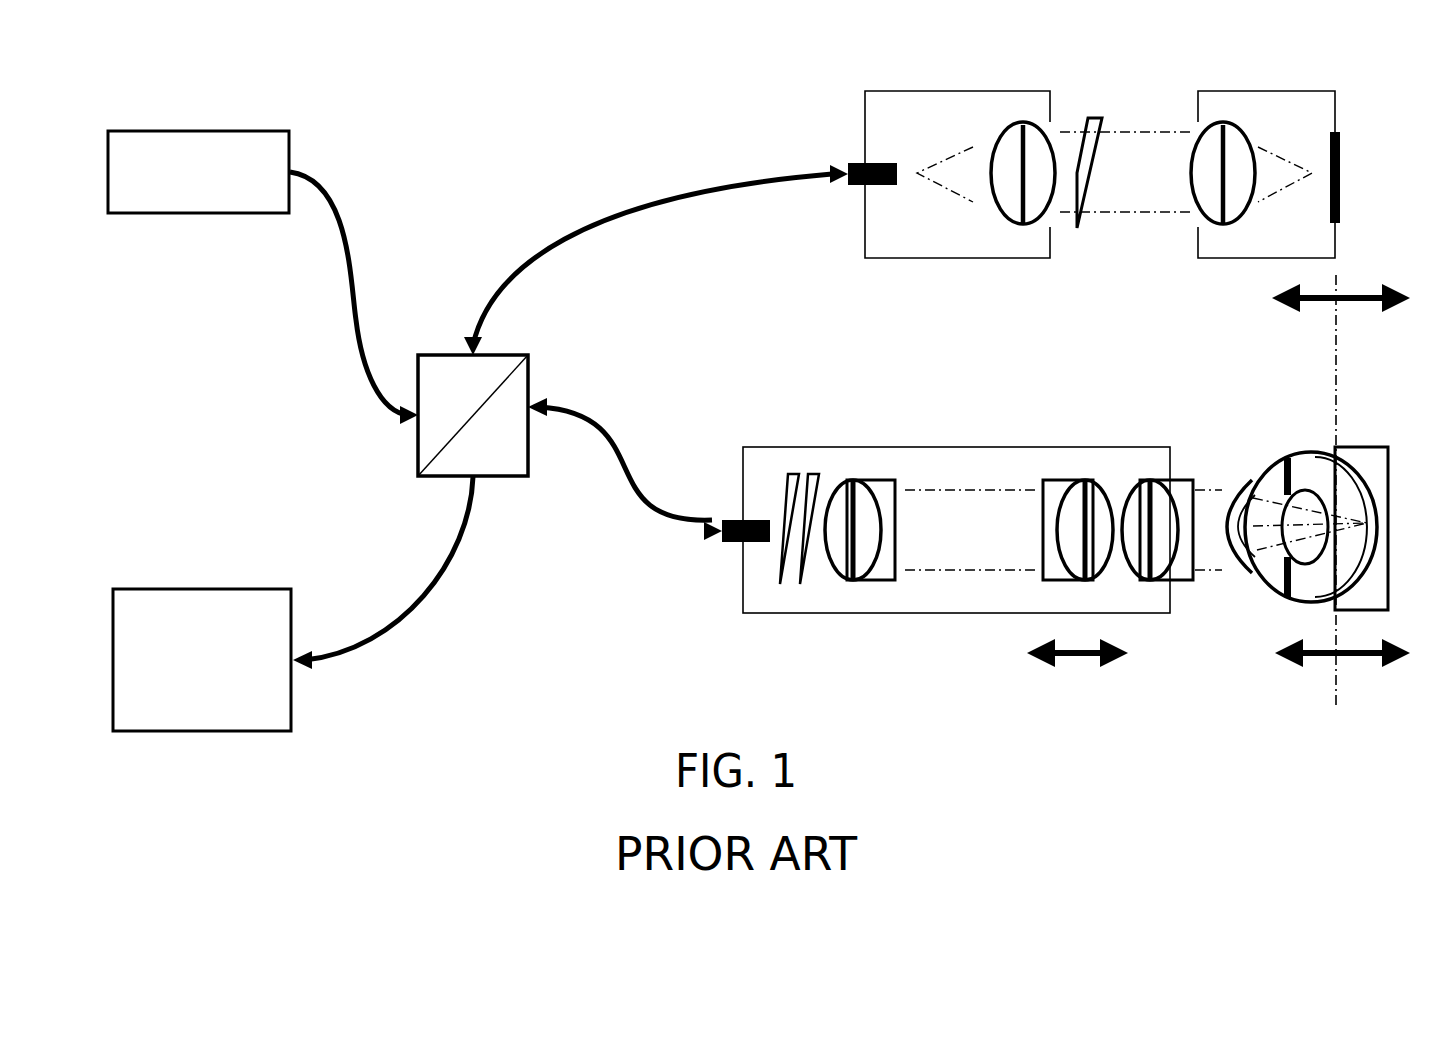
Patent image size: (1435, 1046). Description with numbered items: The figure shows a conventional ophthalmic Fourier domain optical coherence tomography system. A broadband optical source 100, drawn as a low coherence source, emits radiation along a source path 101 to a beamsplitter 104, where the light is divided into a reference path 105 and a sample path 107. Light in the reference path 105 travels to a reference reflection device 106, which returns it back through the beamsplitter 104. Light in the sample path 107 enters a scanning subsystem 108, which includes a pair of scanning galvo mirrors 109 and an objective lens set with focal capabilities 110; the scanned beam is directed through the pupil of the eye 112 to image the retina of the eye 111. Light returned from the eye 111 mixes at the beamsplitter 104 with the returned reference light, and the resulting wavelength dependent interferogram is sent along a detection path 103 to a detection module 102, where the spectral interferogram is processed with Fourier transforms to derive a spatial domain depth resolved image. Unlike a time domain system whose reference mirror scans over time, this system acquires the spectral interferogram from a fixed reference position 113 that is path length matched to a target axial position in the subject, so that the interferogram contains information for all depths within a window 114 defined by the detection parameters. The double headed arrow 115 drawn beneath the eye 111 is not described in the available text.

The broadband optical source 100 is at (198, 213).
The source path 101 is at (353, 264).
The detection module 102 is at (200, 589).
The detection path 103 is at (402, 615).
The beamsplitter 104 is at (478, 478).
The reference path 105 is at (620, 210).
The reference reflection device 106 is at (1137, 173).
The sample path 107 is at (670, 510).
The scanning subsystem 108 is at (980, 620).
The scanning galvo mirrors 109 is at (790, 590).
The objective lens set with focal capabilities 110 is at (1073, 660).
The eye 111 is at (1305, 603).
The pupil of the eye 112 is at (1287, 598).
The fixed reference position 113 is at (1330, 367).
The window 114 is at (1363, 447).
The eye translation arrow 115 is at (1317, 667).